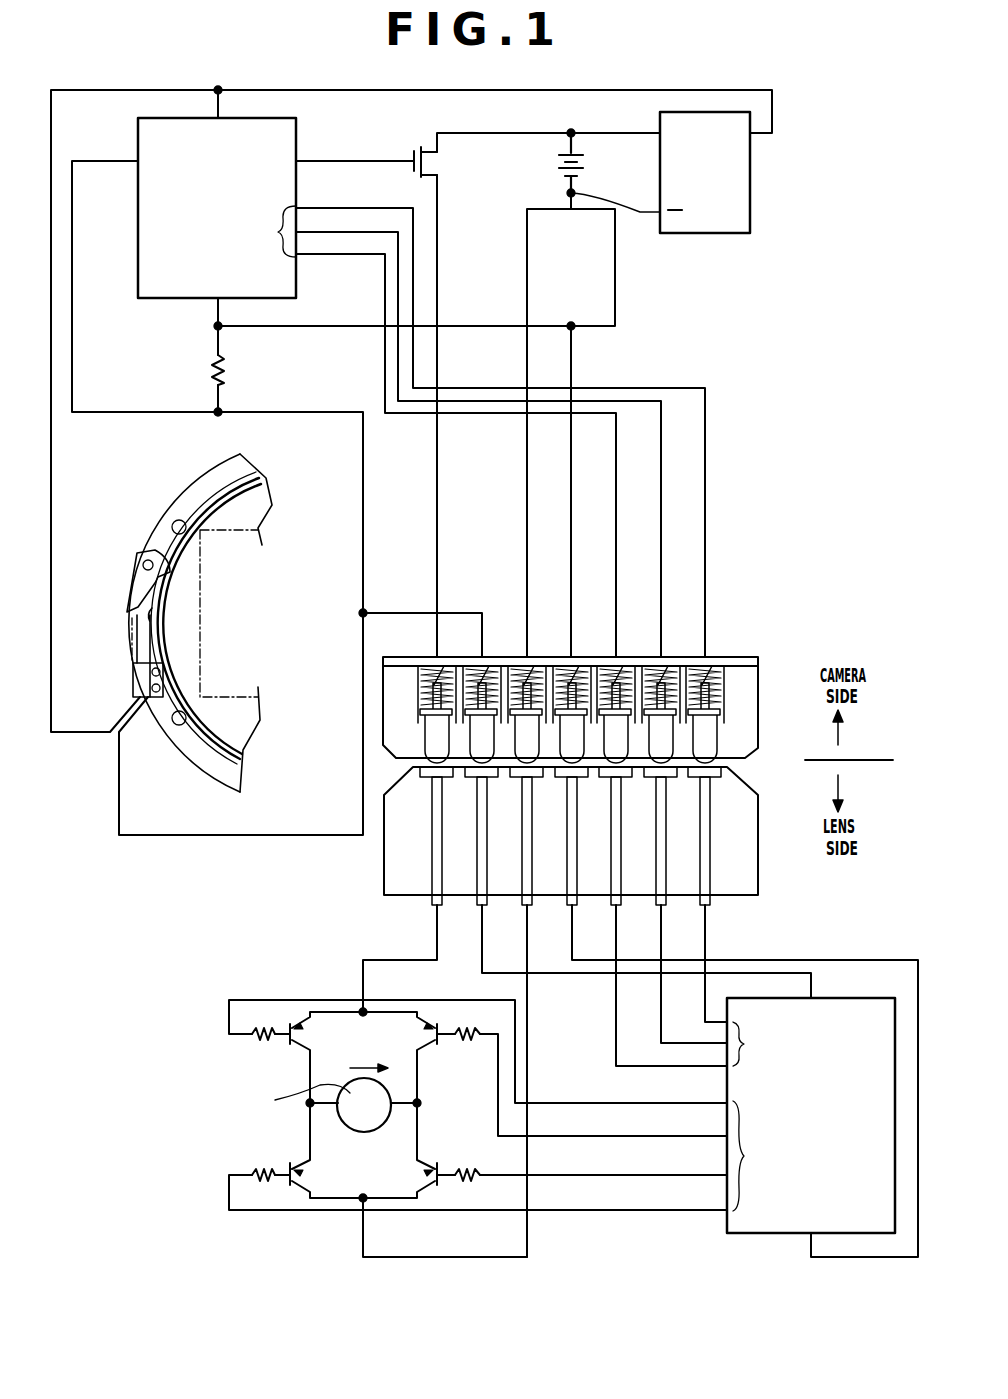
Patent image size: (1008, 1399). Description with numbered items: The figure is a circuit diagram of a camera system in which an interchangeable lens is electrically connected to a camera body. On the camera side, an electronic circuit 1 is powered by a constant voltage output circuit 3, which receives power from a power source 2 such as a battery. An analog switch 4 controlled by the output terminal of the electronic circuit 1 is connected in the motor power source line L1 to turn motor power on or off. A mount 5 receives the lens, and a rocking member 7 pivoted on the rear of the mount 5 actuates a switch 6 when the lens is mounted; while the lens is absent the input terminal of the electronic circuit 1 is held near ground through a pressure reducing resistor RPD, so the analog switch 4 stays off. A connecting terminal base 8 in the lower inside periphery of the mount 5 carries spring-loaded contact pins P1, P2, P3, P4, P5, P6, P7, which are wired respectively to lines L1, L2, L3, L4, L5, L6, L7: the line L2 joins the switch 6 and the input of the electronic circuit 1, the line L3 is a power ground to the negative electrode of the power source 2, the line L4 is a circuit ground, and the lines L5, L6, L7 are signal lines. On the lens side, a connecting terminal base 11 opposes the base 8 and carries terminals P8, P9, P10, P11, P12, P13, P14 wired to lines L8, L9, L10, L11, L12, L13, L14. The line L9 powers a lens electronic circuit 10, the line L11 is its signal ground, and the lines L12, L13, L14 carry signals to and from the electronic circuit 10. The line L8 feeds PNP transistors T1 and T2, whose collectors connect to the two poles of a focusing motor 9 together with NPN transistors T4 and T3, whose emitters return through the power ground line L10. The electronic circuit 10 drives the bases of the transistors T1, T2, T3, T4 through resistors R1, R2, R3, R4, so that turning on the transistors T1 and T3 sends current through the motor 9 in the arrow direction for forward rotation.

The electronic circuit 1 is at (296, 131).
The power source 2 is at (585, 163).
The constant voltage output circuit 3 is at (750, 212).
The analog switch 4 is at (433, 163).
The mount 5 is at (192, 490).
The switch 6 is at (132, 680).
The member 7 is at (143, 563).
The connecting terminal base 8 is at (758, 687).
The motor 9 is at (345, 1120).
The electronic circuit 10 is at (880, 996).
The connecting terminal base 11 is at (758, 862).
The pressure reducing resistor RPD is at (225, 369).
The line L1 is at (437, 604).
The line L2 is at (478, 614).
The line L3 is at (526, 604).
The line L4 is at (571, 604).
The line L5 is at (614, 604).
The line L6 is at (660, 604).
The line L7 is at (704, 604).
The line L8 is at (436, 938).
The line L9 is at (481, 938).
The line L10 is at (526, 938).
The line L11 is at (571, 938).
The line L12 is at (616, 938).
The line L13 is at (660, 938).
The line L14 is at (705, 938).
The connecting terminal P1 is at (432, 668).
The connecting terminal P2 is at (478, 668).
The connecting terminal P3 is at (524, 668).
The connecting terminal P4 is at (568, 668).
The connecting terminal P5 is at (608, 668).
The connecting terminal P6 is at (656, 668).
The connecting terminal P7 is at (699, 668).
The connecting terminal P8 is at (432, 842).
The connecting terminal P9 is at (477, 843).
The connecting terminal P10 is at (522, 848).
The connecting terminal P11 is at (567, 848).
The connecting terminal P12 is at (611, 848).
The connecting terminal P13 is at (656, 848).
The connecting terminal P14 is at (700, 848).
The PNP transistor T1 is at (306, 1034).
The PNP transistor T2 is at (425, 1034).
The NPN transistor T3 is at (425, 1175).
The NPN transistor T4 is at (306, 1175).
The resistor R1 is at (265, 1045).
The resistor R2 is at (468, 1045).
The resistor R3 is at (468, 1165).
The resistor R4 is at (265, 1165).